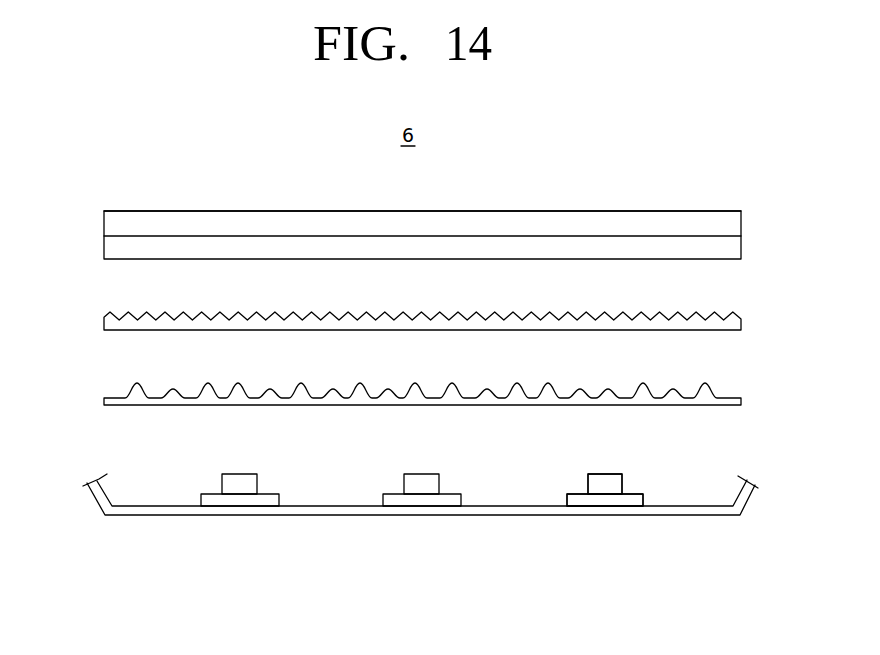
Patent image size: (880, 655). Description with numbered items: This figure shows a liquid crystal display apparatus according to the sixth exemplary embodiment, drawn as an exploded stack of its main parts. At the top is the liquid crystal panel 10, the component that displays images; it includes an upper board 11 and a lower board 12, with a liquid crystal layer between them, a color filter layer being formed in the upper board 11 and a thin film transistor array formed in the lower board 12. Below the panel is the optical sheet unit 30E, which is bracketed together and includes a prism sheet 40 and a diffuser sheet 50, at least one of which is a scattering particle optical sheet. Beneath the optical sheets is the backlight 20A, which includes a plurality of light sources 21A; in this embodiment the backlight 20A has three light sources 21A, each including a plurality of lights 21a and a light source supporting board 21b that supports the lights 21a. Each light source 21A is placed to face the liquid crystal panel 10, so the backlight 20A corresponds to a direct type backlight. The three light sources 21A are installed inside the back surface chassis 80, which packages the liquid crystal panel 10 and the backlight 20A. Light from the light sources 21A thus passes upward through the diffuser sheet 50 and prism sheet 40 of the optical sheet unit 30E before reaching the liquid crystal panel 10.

The liquid crystal panel 10 is at (93, 228).
The upper board 11 is at (737, 221).
The lower board 12 is at (737, 245).
The optical sheet unit 30E is at (97, 310).
The prism sheet 40 is at (741, 322).
The diffuser sheet 50 is at (741, 400).
The back surface chassis 80 is at (678, 516).
The backlight 20A is at (436, 518).
The light source 21A is at (237, 505).
The light 21a is at (603, 478).
The light source supporting board 21b is at (619, 475).